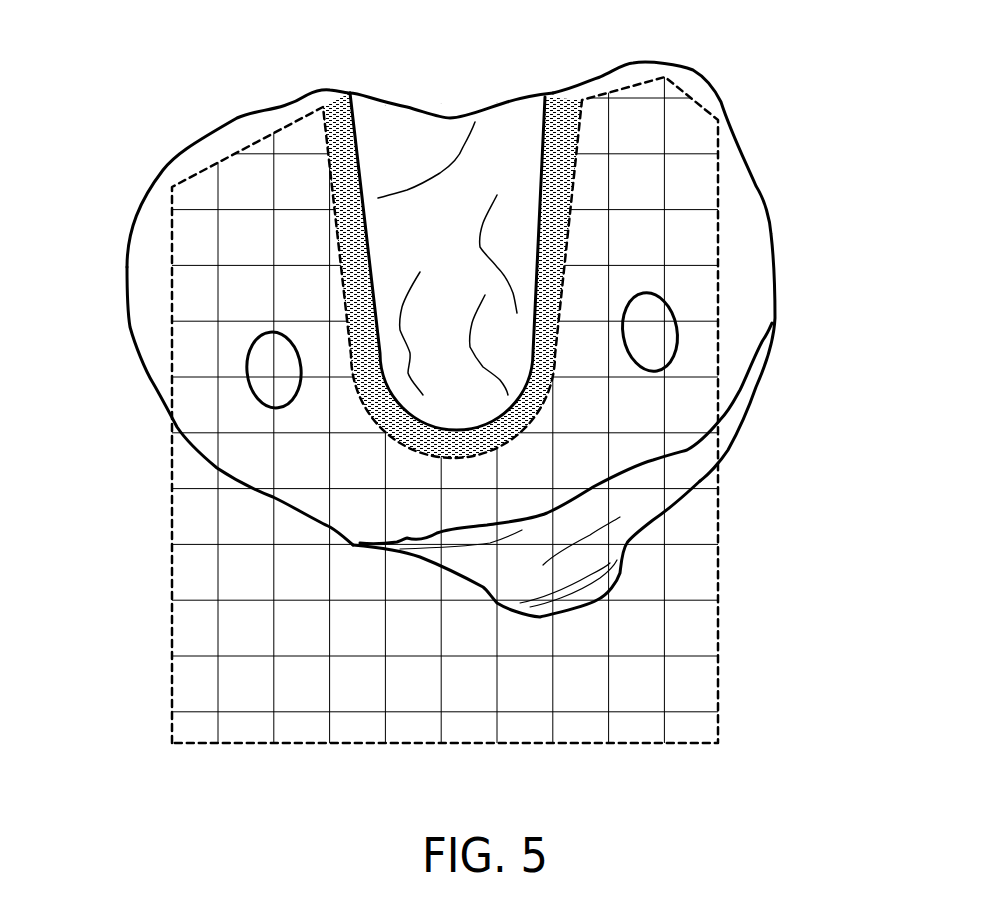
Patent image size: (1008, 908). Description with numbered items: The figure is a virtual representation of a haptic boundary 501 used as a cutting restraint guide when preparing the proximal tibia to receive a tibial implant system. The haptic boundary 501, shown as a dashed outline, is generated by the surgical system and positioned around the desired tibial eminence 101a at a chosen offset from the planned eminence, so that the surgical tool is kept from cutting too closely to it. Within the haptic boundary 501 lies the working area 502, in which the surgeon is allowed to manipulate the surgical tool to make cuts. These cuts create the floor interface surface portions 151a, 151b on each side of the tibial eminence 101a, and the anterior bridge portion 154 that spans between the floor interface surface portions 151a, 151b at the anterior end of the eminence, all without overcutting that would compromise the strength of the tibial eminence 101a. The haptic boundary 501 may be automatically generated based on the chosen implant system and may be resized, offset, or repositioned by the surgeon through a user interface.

The tibial eminence 101a is at (507, 120).
The floor interface surface portion 151a is at (745, 252).
The floor interface surface portion 151b is at (187, 200).
The bridge portion 154 is at (442, 493).
The haptic boundary 501 is at (720, 331).
The working area 502 is at (690, 405).